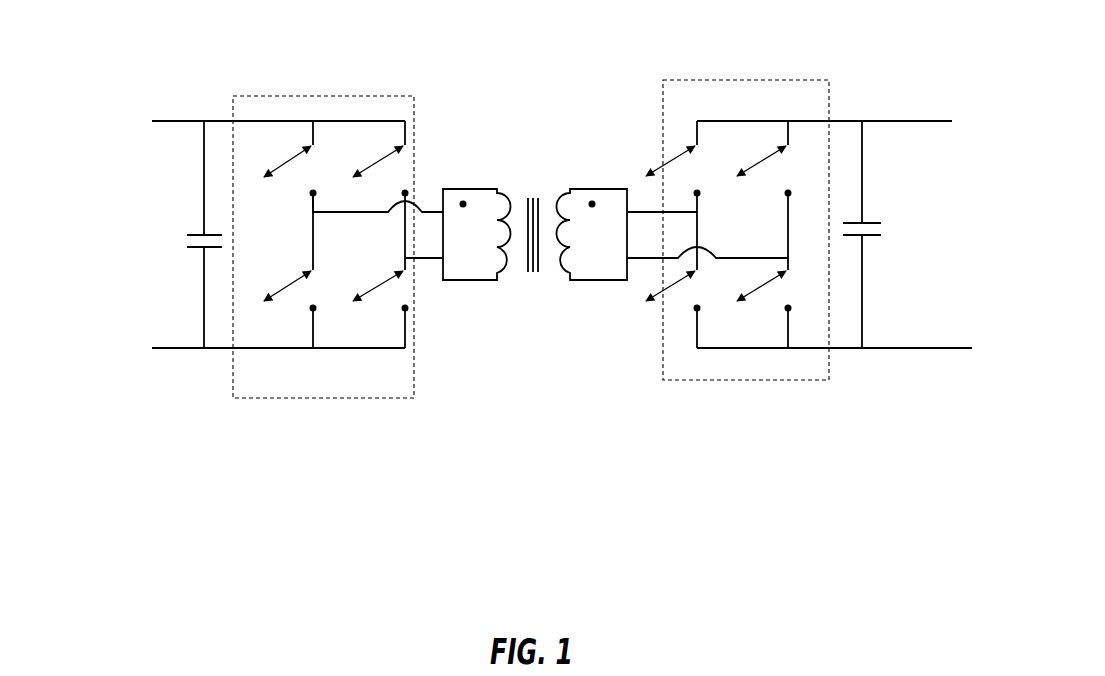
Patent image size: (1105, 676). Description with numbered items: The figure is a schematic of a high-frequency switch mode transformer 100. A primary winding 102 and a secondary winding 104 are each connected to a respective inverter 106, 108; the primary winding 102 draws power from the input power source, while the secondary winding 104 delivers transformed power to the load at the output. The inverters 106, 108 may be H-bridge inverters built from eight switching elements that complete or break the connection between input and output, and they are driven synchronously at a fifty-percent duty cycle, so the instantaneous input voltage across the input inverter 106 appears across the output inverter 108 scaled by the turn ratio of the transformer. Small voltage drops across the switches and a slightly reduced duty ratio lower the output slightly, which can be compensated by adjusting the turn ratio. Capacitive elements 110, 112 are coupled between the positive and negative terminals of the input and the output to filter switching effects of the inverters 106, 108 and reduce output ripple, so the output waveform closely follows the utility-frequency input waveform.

The high-frequency switch mode transformer 100 is at (522, 28).
The primary winding 102 is at (482, 282).
The secondary winding 104 is at (592, 188).
The inverter 106 is at (347, 98).
The inverter 108 is at (722, 80).
The capacitive element 110 is at (202, 248).
The capacitive element 112 is at (880, 243).